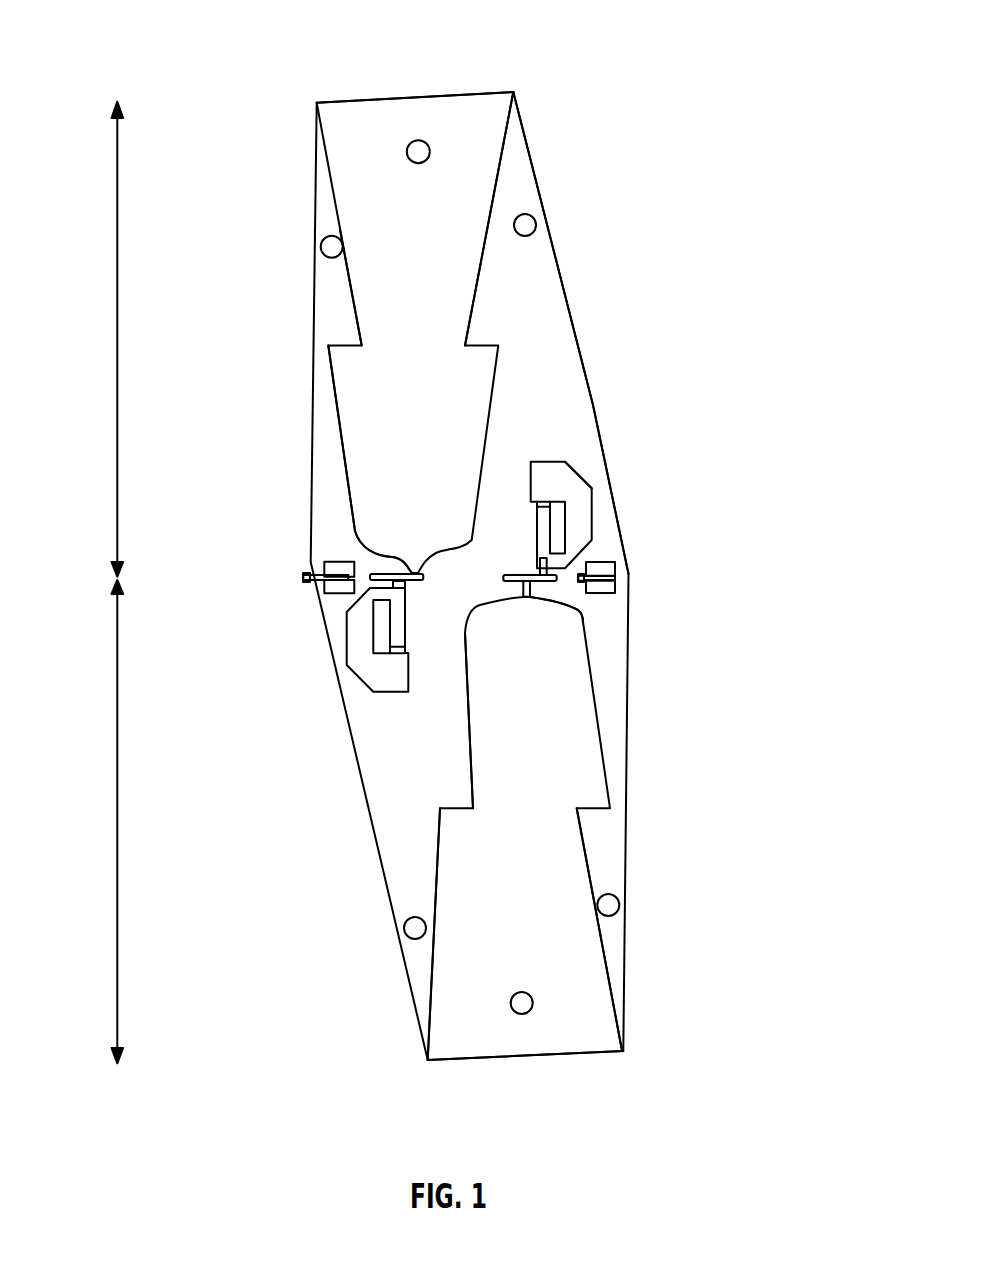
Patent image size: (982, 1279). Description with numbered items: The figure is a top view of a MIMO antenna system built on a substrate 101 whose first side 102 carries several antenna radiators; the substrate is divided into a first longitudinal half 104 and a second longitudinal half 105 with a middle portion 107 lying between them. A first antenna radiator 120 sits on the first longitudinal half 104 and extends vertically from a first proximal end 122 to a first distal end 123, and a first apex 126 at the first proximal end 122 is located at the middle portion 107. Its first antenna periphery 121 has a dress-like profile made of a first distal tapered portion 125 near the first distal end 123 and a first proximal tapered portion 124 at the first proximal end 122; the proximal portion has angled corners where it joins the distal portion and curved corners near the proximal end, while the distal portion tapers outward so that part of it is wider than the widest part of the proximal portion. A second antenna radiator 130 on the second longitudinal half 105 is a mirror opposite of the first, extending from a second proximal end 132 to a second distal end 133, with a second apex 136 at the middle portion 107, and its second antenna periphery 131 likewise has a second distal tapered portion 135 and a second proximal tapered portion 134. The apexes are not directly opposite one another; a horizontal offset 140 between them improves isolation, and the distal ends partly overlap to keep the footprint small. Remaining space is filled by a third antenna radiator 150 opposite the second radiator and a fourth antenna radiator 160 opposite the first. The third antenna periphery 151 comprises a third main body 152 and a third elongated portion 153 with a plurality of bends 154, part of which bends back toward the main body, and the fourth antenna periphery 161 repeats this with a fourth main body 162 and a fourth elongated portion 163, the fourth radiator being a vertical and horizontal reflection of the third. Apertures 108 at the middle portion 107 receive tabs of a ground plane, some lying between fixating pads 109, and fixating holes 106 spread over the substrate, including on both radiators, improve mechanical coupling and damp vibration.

The substrate 101 is at (572, 380).
The first side 102 is at (547, 288).
The first longitudinal half 104 is at (117, 328).
The second longitudinal half 105 is at (117, 820).
The fixating holes 106 is at (407, 155).
The middle portion 107 is at (628, 577).
The apertures 108 is at (305, 580).
The fixating pads 109 is at (320, 565).
The first antenna radiator 120 is at (357, 392).
The first antenna periphery 121 is at (357, 323).
The first proximal end 122 is at (405, 542).
The first distal end 123 is at (360, 100).
The first proximal tapered portion 124 is at (355, 457).
The first distal tapered portion 125 is at (490, 140).
The first apex 126 is at (415, 567).
The second antenna radiator 130 is at (593, 785).
The second antenna periphery 131 is at (590, 860).
The second proximal end 132 is at (528, 598).
The second distal end 133 is at (525, 1060).
The second proximal tapered portion 134 is at (487, 788).
The second distal tapered portion 135 is at (472, 968).
The second apex 136 is at (540, 583).
The horizontal offset 140 is at (458, 582).
The third antenna radiator 150 is at (570, 492).
The third antenna periphery 151 is at (580, 465).
The third main body 152 is at (553, 470).
The third elongated portion 153 is at (540, 542).
The bends 154 is at (580, 537).
The fourth antenna radiator 160 is at (324, 702).
The fourth antenna periphery 161 is at (360, 687).
The fourth main body 162 is at (380, 683).
The fourth elongated portion 163 is at (370, 588).